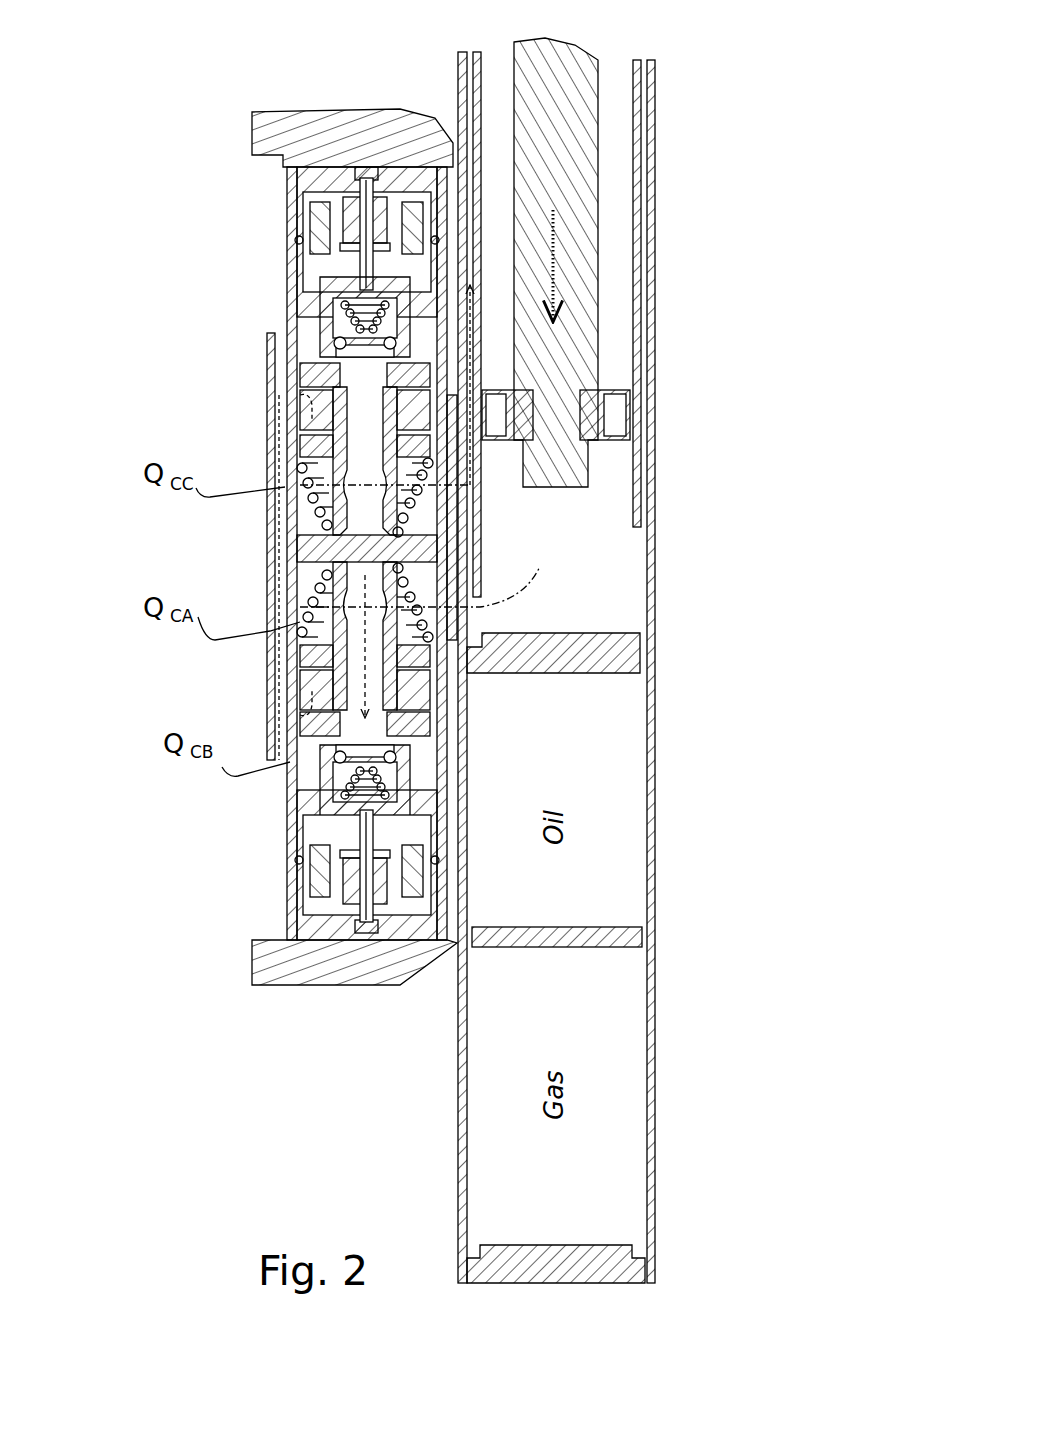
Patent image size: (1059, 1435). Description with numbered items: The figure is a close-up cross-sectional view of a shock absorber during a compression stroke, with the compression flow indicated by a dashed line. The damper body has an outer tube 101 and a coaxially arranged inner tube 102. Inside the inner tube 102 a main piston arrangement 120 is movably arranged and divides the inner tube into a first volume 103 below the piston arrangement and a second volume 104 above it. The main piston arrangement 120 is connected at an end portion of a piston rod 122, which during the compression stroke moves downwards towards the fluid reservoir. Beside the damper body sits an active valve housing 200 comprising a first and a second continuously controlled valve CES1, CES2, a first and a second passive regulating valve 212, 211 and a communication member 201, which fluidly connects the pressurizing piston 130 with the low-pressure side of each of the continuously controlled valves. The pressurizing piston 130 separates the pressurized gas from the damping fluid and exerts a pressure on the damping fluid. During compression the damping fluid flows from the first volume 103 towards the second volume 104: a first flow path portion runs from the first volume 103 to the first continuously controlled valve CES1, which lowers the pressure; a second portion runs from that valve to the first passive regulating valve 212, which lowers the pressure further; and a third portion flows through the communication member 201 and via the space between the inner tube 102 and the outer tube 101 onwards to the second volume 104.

The outer tube 101 is at (652, 463).
The inner tube 102 is at (640, 228).
The first volume 103 is at (612, 497).
The second volume 104 is at (620, 331).
The main piston arrangement 120 is at (612, 422).
The piston rod 122 is at (578, 160).
The pressurizing piston 130 is at (627, 927).
The active valve housing 200 is at (197, 552).
The communication member 201 is at (283, 673).
The second passive regulating valve 211 is at (335, 390).
The first passive regulating valve 212 is at (300, 700).
The first electrical continuously controlled valve CES1 is at (283, 250).
The second electrical continuously controlled valve CES2 is at (283, 862).